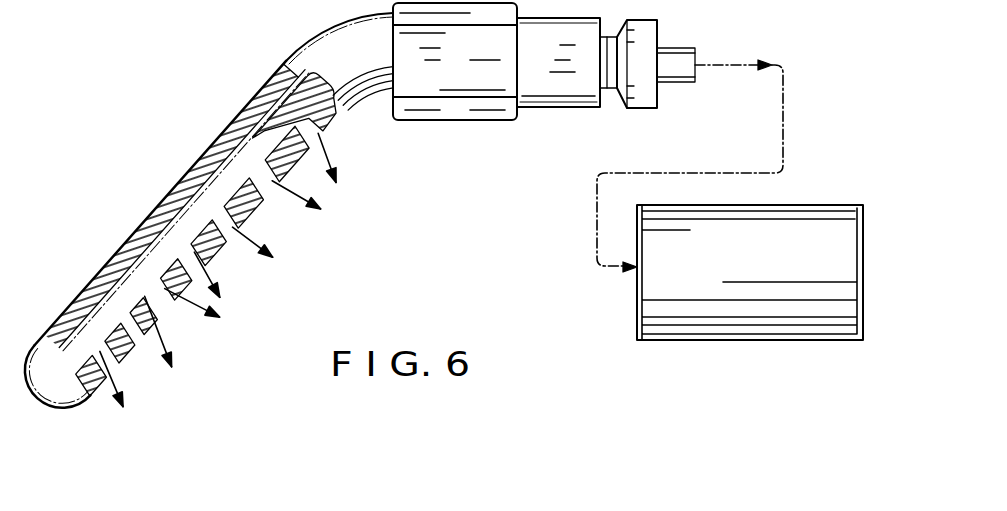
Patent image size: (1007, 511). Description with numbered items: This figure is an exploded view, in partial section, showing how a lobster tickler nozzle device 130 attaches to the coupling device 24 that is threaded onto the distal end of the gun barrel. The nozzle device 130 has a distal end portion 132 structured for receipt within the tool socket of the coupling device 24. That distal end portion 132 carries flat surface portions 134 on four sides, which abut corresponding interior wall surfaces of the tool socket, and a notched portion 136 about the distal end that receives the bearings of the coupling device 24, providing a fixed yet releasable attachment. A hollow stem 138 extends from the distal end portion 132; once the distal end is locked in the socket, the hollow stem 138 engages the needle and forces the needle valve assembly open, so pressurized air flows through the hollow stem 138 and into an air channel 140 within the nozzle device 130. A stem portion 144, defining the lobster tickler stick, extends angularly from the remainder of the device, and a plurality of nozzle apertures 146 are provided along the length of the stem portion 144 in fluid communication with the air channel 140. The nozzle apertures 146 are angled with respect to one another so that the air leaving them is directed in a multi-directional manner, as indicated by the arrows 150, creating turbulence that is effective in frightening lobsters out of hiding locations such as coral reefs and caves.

The coupling device 24 is at (697, 341).
The lobster tickler nozzle device 130 is at (212, 118).
The distal end portion 132 is at (565, 112).
The flat surface portions 134 is at (545, 90).
The notched portion 136 is at (607, 90).
The hollow stem 138 is at (685, 52).
The air channel 140 is at (270, 133).
The stem portion 144 is at (136, 238).
The nozzle apertures 146 is at (330, 117).
The arrows 150 is at (290, 204).